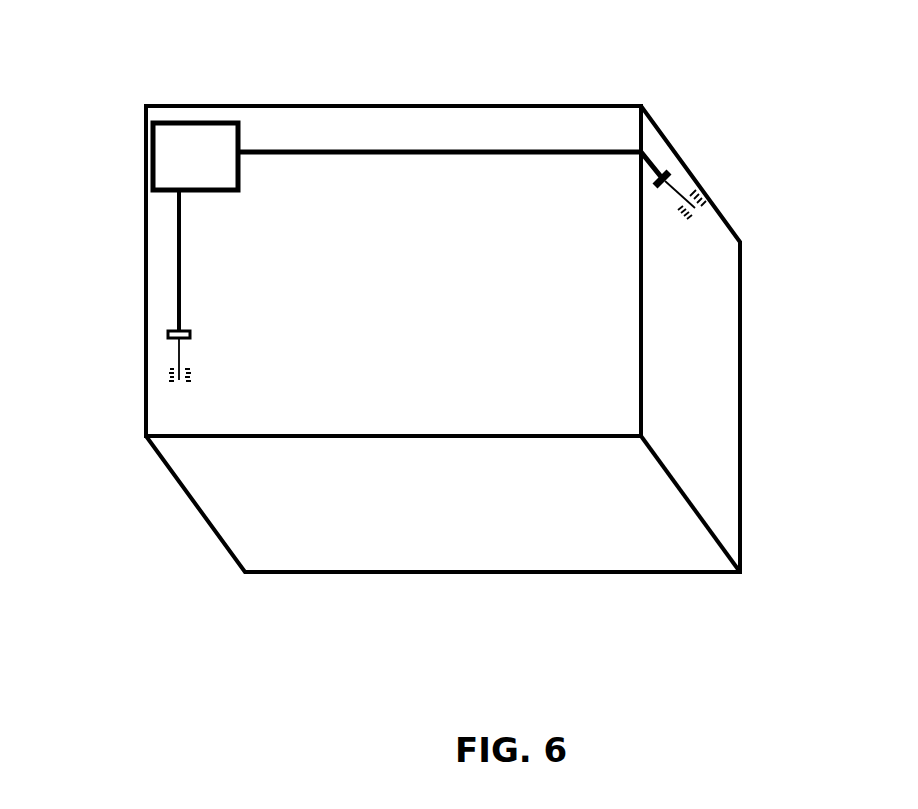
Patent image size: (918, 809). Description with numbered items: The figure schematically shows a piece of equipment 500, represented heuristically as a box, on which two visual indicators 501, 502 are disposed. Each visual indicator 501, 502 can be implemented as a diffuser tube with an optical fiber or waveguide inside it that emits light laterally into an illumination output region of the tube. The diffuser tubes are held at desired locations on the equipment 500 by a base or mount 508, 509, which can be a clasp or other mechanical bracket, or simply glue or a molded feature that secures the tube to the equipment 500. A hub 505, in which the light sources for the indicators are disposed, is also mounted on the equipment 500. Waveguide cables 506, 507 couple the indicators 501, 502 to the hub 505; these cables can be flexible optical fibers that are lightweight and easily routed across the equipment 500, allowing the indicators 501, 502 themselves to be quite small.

The piece of equipment 500 is at (250, 555).
The visual indicator 501 is at (178, 350).
The visual indicator 502 is at (678, 190).
The hub 505 is at (168, 138).
The waveguide cable 506 is at (180, 253).
The waveguide cable 507 is at (470, 150).
The base or mount 508 is at (168, 334).
The base or mount 509 is at (665, 170).